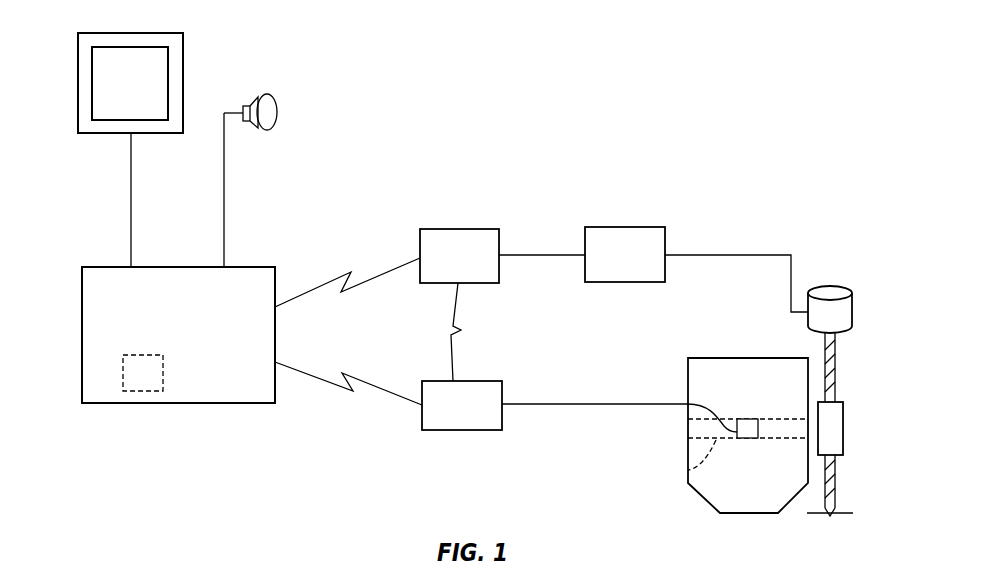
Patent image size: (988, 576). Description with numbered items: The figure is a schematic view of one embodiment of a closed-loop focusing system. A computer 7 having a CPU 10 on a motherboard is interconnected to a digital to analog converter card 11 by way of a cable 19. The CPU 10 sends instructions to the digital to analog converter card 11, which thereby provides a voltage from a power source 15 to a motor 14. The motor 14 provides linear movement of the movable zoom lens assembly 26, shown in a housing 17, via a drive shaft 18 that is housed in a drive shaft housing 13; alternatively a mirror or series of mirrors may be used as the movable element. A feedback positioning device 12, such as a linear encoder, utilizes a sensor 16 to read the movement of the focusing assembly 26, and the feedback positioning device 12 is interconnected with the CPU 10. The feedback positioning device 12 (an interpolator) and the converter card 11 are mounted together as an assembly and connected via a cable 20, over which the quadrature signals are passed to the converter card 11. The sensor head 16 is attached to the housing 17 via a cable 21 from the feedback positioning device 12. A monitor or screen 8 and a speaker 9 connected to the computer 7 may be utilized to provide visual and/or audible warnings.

The computer 7 is at (101, 267).
The monitor or screen 8 is at (88, 33).
The speaker 9 is at (263, 95).
The CPU 10 is at (137, 392).
The digital to analog converter card 11 is at (462, 229).
The feedback positioning device 12 is at (465, 430).
The drive shaft housing 13 is at (843, 430).
The motor 14 is at (851, 313).
The power source 15 is at (625, 227).
The sensor 16 is at (748, 438).
The housing 17 is at (745, 514).
The drive shaft 18 is at (836, 392).
The cable 19 is at (350, 276).
The cable 20 is at (452, 330).
The cable 21 is at (578, 404).
The movable zoom lens assembly 26 is at (688, 470).